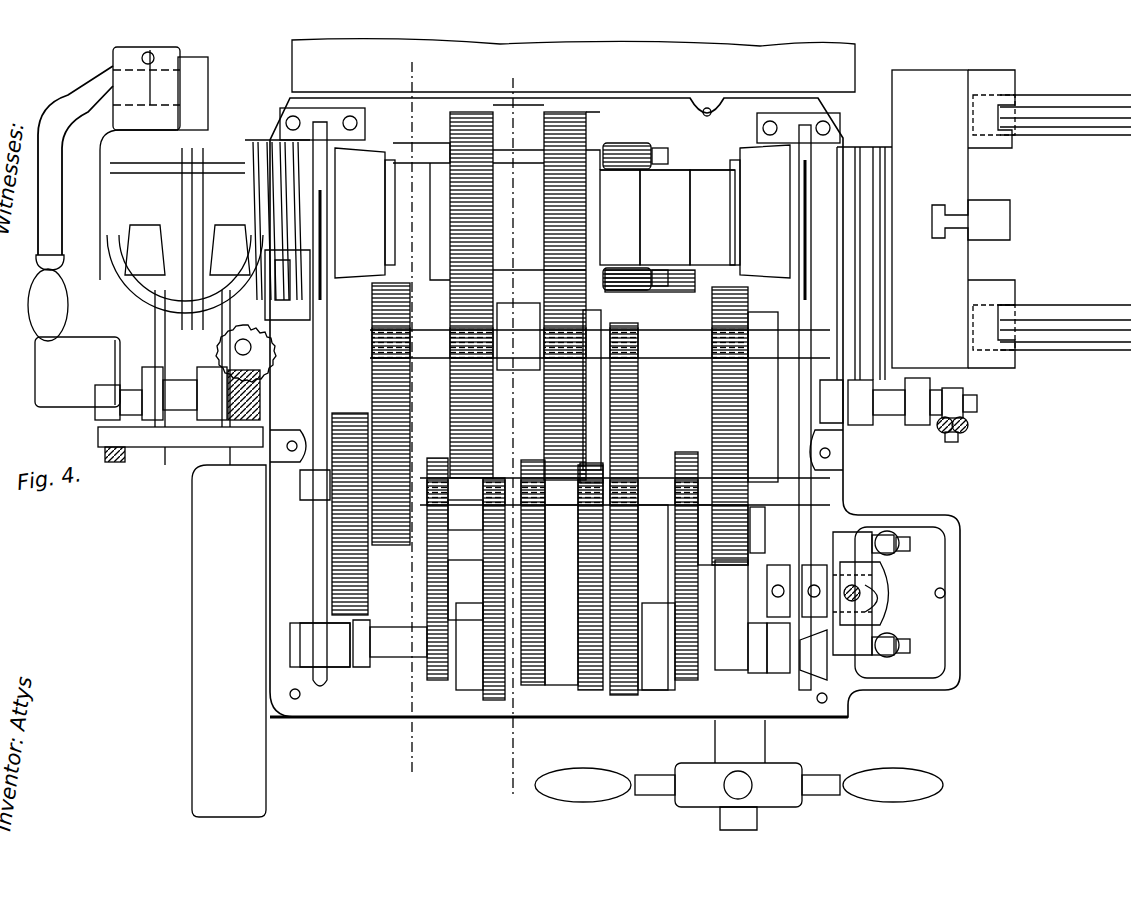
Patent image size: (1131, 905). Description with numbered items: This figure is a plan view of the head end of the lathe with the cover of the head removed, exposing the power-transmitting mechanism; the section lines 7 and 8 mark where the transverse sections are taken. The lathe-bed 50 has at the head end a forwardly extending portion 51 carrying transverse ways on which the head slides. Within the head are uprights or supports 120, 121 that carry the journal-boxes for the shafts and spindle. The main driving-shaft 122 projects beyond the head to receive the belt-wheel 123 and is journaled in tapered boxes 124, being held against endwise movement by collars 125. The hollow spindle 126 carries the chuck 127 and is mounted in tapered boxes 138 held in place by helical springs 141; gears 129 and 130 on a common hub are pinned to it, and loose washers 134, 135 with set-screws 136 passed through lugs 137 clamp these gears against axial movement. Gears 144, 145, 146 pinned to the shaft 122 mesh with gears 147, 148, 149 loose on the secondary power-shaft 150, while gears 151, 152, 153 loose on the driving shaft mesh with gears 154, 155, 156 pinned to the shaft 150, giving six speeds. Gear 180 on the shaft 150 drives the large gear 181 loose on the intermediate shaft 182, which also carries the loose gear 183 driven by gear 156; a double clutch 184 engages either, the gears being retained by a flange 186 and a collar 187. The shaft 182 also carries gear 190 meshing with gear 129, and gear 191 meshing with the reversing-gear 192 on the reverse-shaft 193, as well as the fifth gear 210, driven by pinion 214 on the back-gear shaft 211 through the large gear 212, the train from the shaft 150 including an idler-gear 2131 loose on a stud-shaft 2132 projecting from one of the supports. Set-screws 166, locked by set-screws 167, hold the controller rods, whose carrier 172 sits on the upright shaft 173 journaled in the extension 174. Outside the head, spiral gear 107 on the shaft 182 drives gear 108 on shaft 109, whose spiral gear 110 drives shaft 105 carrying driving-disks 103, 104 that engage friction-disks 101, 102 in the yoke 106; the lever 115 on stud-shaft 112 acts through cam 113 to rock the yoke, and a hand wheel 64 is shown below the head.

The section line 7 7 is at (410, 411).
The section line 8 8 is at (464, 432).
The lathe-bed 50 is at (1052, 234).
The forwardly extending portion 51 is at (820, 66).
The hand wheel 64 is at (790, 790).
The friction-disk 101 is at (165, 460).
The friction-disk 102 is at (205, 480).
The driving-disk 103 is at (140, 230).
The driving-disk 104 is at (225, 230).
The shaft 105 is at (150, 255).
The yoke 106 is at (128, 310).
The spiral gear 107 is at (258, 398).
The complemental gear 108 is at (290, 285).
The shaft 109 is at (236, 350).
The spiral gear 110 is at (110, 115).
The stud-shaft 112 is at (182, 55).
The cam 113 is at (210, 100).
The lever 115 is at (40, 234).
The upright or support 120 is at (320, 685).
The upright or support 121 is at (805, 690).
The main driving-shaft 122 is at (398, 648).
The belt-wheel 123 is at (190, 660).
The box 124 is at (345, 660).
The collar 125 is at (360, 668).
The spindle 126 is at (701, 217).
The chuck 127 is at (950, 275).
The gear 129 is at (472, 118).
The gear 130 is at (622, 141).
The loose washer 134 is at (600, 225).
The loose washer 135 is at (600, 188).
The set-screw 136 is at (660, 148).
The ear or lug 137 is at (630, 148).
The box 138 is at (355, 180).
The helical spring 141 is at (258, 168).
The gear 144 is at (492, 700).
The gear 145 is at (532, 690).
The gear 146 is at (685, 680).
The gear 147 is at (468, 590).
The gear 148 is at (580, 545).
The gear 149 is at (755, 555).
The secondary power-shaft 150 is at (766, 580).
The gear 151 is at (495, 700).
The gear 152 is at (590, 690).
The gear 153 is at (625, 695).
The gear 154 is at (470, 646).
The gear 155 is at (554, 595).
The gear 156 is at (660, 638).
The set-screw 166 is at (910, 545).
The set-screw 167 is at (890, 535).
The carrier 172 is at (862, 595).
The upright shaft 173 is at (870, 602).
The extension 174 is at (935, 512).
The gear 180 is at (723, 548).
The large gear 181 is at (742, 435).
The intermediate shaft 182 is at (858, 432).
The loose gear 183 is at (625, 395).
The double clutch 184 is at (725, 350).
The flange 186 is at (601, 461).
The collar 187 is at (790, 403).
The gear 190 is at (480, 380).
The gear 191 is at (598, 390).
The reversing-gear 192 is at (611, 325).
The reverse-shaft 193 is at (695, 275).
The gear 210 is at (385, 292).
The back-gear shaft 211 is at (450, 520).
The large gear 212 is at (332, 470).
The pinion 214 is at (470, 585).
The collar 2131 is at (350, 603).
The gear 2132 is at (355, 575).